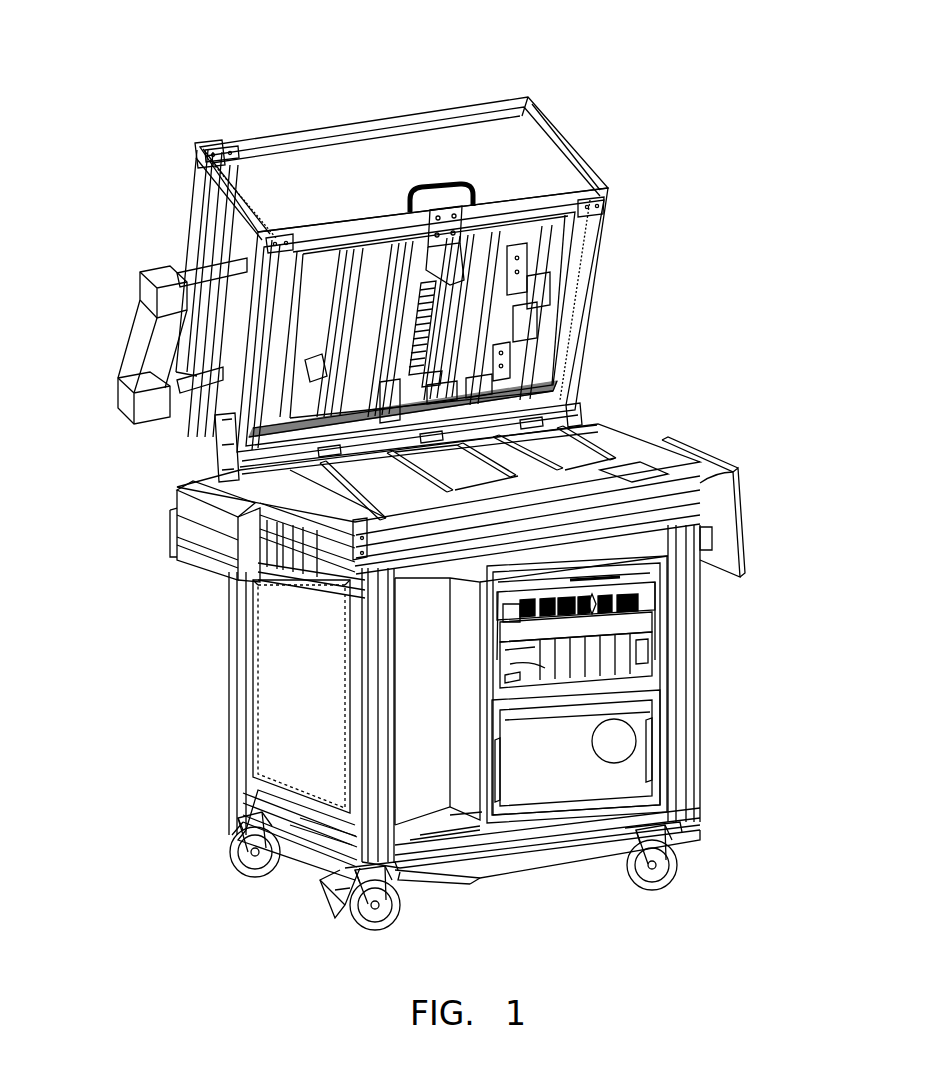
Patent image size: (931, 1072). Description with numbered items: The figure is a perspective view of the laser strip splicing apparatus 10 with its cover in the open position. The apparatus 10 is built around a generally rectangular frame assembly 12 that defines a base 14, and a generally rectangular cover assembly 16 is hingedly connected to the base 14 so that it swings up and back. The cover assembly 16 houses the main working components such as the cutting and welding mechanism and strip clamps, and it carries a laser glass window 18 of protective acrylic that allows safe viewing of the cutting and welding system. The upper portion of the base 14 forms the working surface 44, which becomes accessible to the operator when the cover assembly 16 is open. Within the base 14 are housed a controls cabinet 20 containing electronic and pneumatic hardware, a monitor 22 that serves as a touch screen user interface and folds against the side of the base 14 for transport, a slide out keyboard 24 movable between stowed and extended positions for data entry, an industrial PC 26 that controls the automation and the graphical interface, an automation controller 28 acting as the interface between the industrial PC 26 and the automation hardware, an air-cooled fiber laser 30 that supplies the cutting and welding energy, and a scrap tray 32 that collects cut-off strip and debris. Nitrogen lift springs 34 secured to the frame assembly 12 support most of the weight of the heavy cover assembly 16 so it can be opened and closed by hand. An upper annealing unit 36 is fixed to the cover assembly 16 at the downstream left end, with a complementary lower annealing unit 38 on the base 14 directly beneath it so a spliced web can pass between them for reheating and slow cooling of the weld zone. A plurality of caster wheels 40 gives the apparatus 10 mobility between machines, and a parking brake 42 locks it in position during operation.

The apparatus 10 is at (726, 176).
The frame assembly 12 is at (500, 845).
The base 14 is at (210, 717).
The cover assembly 16 is at (570, 104).
The laser glass window 18 is at (386, 152).
The controls cabinet 20 is at (290, 650).
The monitor 22 is at (730, 470).
The slide out keyboard 24 is at (660, 586).
The industrial PC 26 is at (650, 608).
The automation controller 28 is at (650, 661).
The fiber laser 30 is at (632, 765).
The scrap tray 32 is at (540, 561).
The nitrogen lift springs 34 is at (216, 455).
The upper annealing unit 36 is at (142, 347).
The lower annealing unit 38 is at (185, 537).
The caster wheels 40 is at (240, 852).
The parking brake 42 is at (335, 893).
The working surface 44 is at (620, 443).